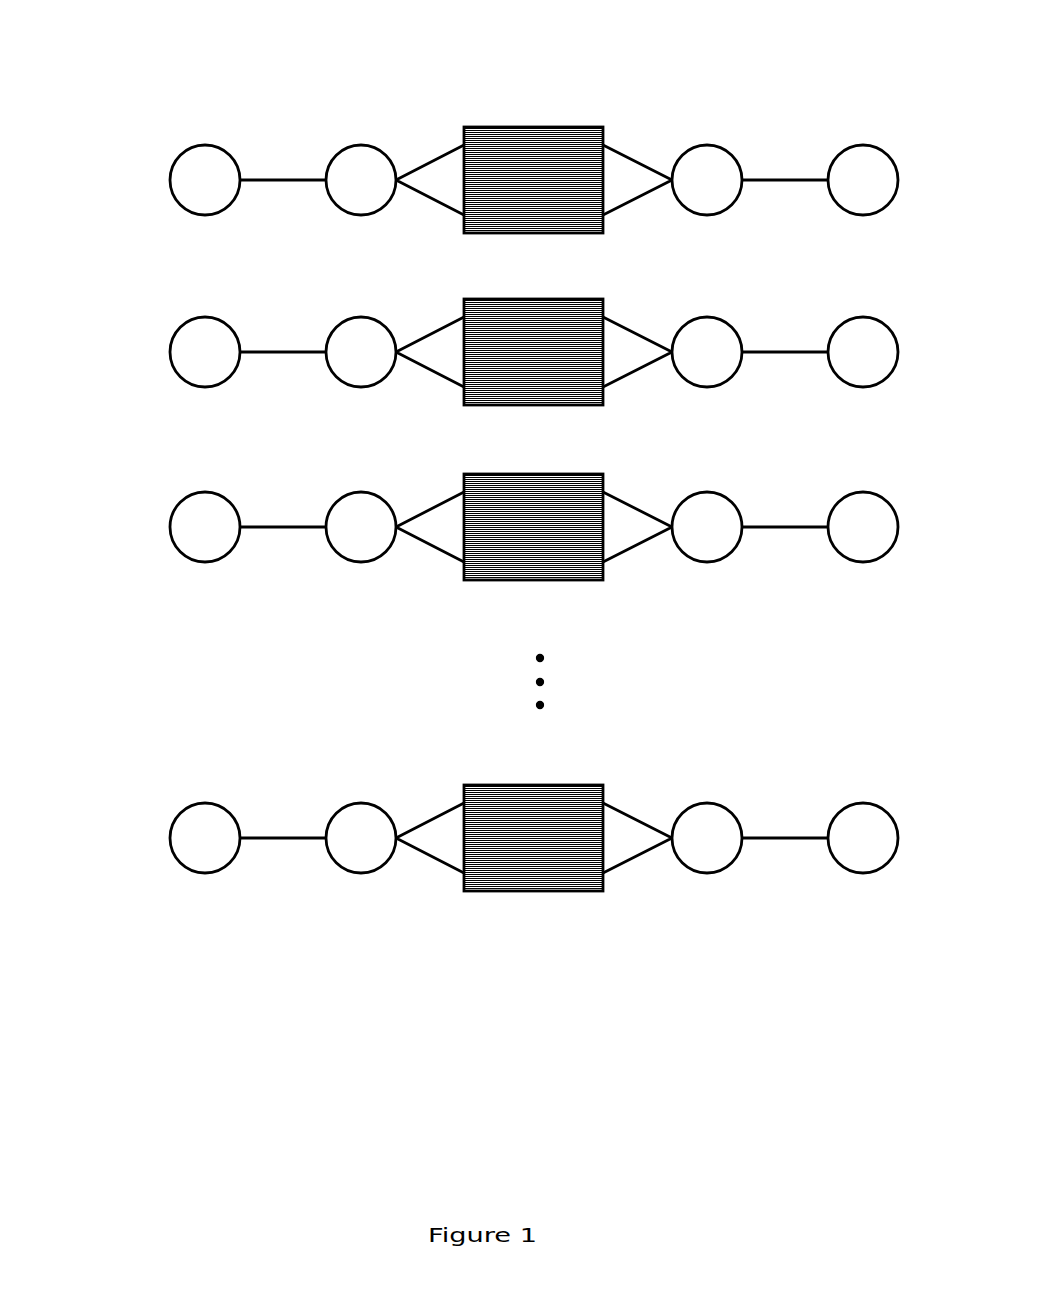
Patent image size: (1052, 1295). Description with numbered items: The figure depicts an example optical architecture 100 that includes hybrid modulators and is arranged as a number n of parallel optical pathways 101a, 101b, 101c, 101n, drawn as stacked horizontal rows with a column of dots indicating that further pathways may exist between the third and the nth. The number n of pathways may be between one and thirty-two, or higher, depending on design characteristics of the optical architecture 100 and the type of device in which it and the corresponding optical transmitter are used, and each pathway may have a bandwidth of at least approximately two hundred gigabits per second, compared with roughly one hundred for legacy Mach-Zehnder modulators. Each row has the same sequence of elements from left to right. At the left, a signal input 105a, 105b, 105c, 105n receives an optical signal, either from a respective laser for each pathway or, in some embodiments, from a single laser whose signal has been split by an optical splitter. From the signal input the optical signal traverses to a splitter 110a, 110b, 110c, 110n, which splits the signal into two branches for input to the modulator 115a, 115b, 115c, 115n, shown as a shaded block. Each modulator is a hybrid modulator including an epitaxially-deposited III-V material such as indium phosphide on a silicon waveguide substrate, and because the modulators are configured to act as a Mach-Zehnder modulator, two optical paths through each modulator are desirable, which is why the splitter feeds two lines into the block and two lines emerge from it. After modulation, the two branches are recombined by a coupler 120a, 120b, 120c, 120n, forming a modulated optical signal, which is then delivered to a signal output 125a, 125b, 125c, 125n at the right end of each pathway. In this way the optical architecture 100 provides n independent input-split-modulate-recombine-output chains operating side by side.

The optical architecture 100 is at (160, 87).
The optical pathway 101a is at (138, 180).
The optical pathway 101b is at (138, 352).
The optical pathway 101c is at (144, 527).
The optical pathway 101n is at (136, 838).
The signal input 105a is at (204, 172).
The signal input 105b is at (201, 350).
The signal input 105c is at (195, 525).
The signal input 105n is at (204, 843).
The splitter 110a is at (357, 172).
The splitter 110b is at (357, 346).
The splitter 110c is at (350, 527).
The splitter 110n is at (357, 843).
The modulator 115a is at (527, 186).
The modulator 115b is at (524, 358).
The modulator 115c is at (516, 536).
The modulator 115n is at (527, 850).
The coupler 120a is at (702, 187).
The coupler 120b is at (702, 358).
The coupler 120c is at (697, 535).
The coupler 120n is at (702, 848).
The signal output 125a is at (855, 183).
The signal output 125b is at (853, 355).
The signal output 125c is at (848, 532).
The signal output 125n is at (855, 845).